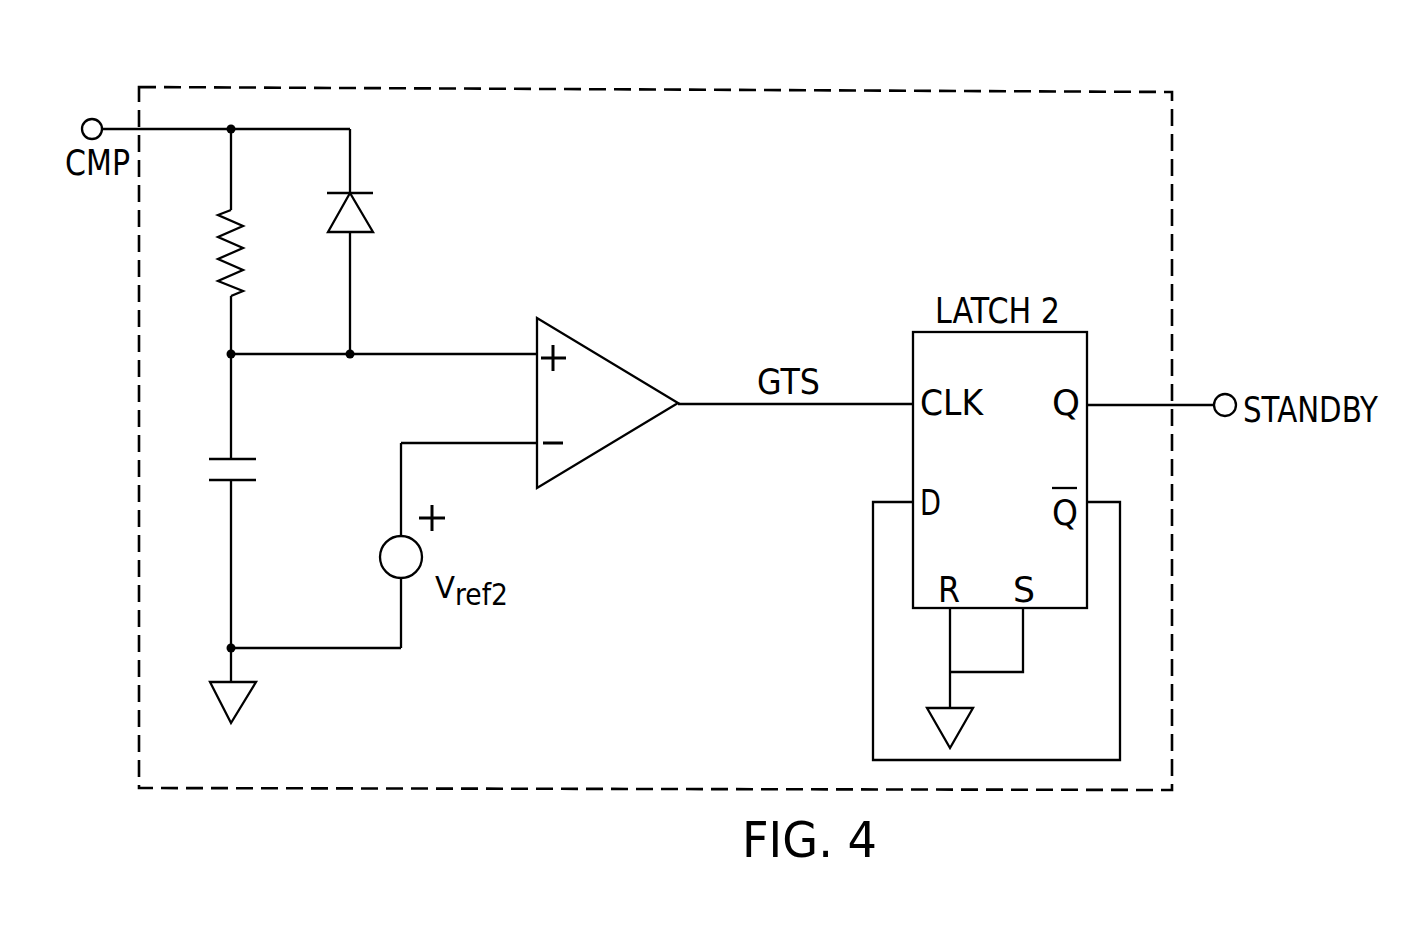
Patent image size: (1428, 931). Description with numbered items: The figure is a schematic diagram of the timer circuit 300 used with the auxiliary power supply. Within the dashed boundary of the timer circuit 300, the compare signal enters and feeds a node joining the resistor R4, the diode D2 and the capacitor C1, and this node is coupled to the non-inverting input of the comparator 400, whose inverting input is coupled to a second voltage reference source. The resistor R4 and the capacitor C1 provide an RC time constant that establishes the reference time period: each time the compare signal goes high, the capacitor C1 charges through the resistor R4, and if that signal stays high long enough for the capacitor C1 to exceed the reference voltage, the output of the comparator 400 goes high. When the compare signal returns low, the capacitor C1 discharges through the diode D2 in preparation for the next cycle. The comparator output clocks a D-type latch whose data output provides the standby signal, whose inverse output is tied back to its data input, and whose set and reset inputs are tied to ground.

The timer circuit 300 is at (225, 86).
The comparator 400 is at (597, 351).
The resistor R4 is at (206, 241).
The diode D2 is at (372, 241).
The capacitor C1 is at (210, 501).